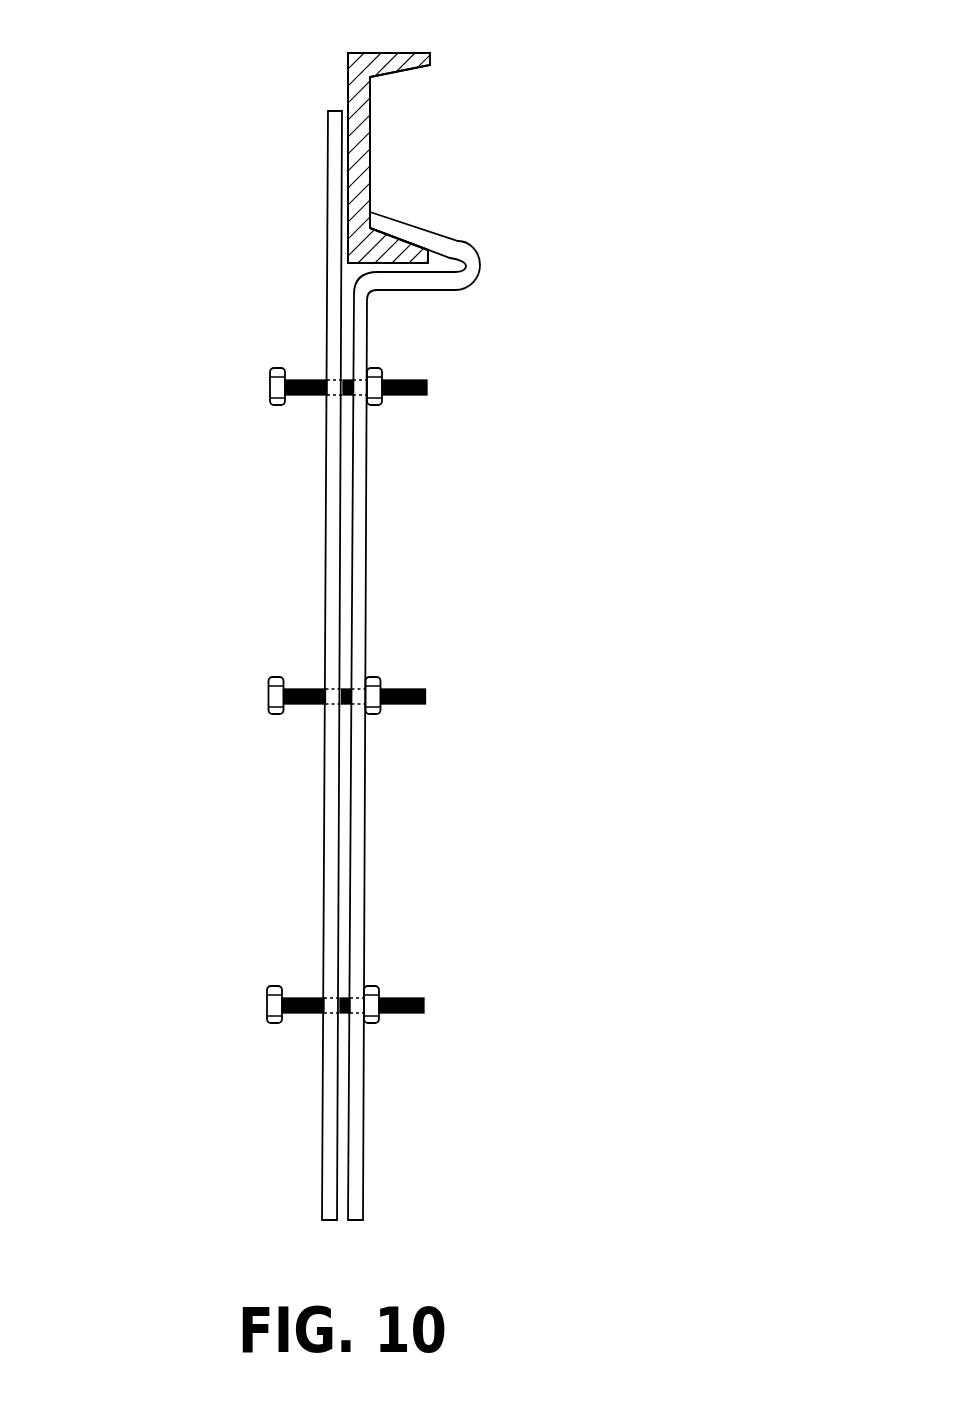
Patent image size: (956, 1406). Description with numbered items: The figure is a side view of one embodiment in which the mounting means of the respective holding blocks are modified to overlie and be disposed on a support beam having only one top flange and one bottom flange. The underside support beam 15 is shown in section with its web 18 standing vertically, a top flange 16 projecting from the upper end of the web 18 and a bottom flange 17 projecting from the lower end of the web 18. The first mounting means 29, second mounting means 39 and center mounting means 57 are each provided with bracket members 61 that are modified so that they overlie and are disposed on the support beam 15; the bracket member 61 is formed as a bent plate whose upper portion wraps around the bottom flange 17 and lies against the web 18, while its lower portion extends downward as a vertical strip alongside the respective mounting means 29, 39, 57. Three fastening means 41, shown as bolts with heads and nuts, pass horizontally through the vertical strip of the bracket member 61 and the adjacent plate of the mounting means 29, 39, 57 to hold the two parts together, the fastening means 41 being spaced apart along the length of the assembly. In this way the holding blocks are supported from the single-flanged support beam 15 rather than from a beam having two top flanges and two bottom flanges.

The underside support beam 15 is at (386, 132).
The top flange 16 is at (395, 53).
The bottom flange 17 is at (407, 252).
The web 18 is at (372, 79).
The first mounting means 29 is at (204, 665).
The second mounting means 39 is at (332, 665).
The fastening means 41 is at (420, 395).
The center mounting means 57 is at (452, 669).
The bracket member 61 is at (402, 198).